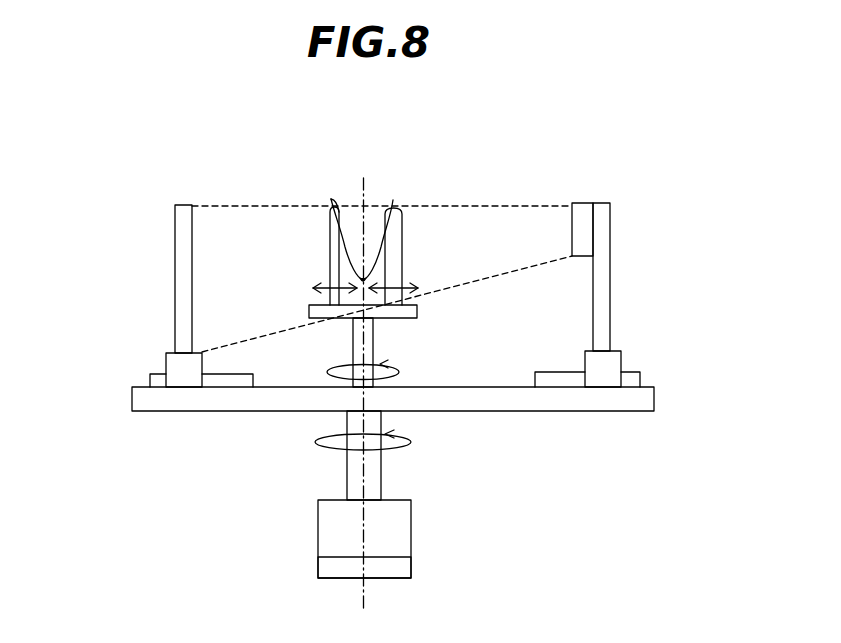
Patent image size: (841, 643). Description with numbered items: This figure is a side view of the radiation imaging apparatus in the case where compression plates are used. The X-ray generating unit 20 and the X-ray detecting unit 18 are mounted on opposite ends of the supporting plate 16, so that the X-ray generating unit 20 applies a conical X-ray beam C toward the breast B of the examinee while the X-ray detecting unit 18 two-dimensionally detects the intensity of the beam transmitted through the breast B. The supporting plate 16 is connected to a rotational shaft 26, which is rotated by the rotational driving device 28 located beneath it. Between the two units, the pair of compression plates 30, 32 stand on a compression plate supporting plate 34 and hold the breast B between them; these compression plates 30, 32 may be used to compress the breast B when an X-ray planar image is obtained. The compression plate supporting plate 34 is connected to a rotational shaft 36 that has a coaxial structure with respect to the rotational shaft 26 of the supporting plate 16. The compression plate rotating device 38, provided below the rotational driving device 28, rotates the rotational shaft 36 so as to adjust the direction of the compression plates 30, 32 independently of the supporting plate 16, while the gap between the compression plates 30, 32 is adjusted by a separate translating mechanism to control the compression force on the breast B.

The supporting plate 16 is at (548, 404).
The X-ray detecting unit 18 is at (175, 240).
The X-ray generating unit 20 is at (586, 212).
The rotational shaft 26 is at (347, 468).
The rotational driving device 28 is at (411, 528).
The compression plate 30 is at (394, 205).
The compression plate 32 is at (331, 219).
The compression plate supporting plate 34 is at (417, 312).
The rotational shaft 36 is at (353, 345).
The compression plate rotating device 38 is at (411, 566).
The breast B is at (344, 244).
The X-ray beam C is at (493, 206).